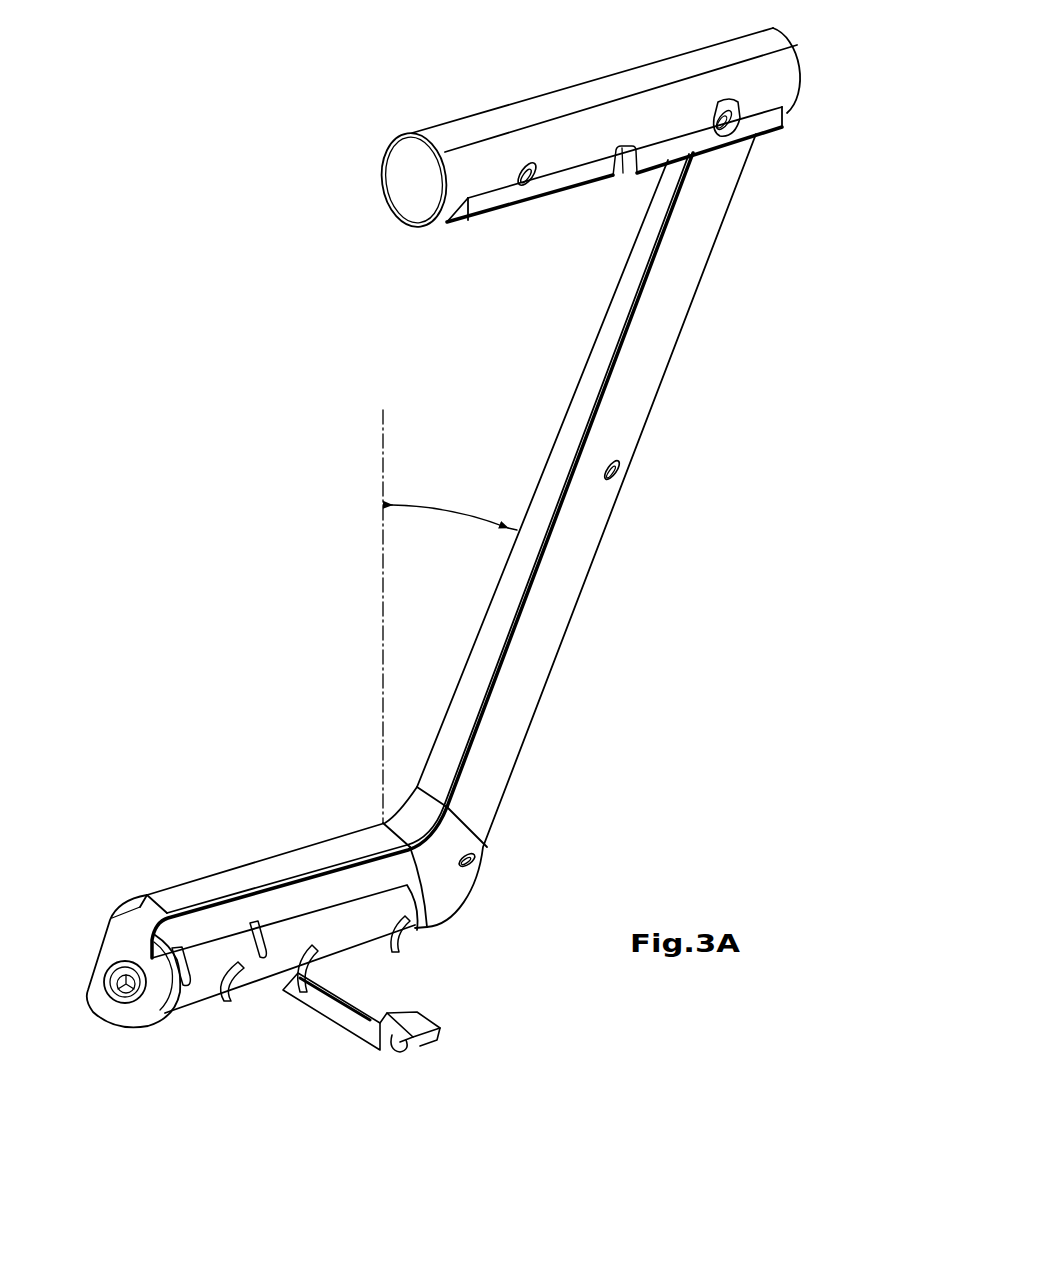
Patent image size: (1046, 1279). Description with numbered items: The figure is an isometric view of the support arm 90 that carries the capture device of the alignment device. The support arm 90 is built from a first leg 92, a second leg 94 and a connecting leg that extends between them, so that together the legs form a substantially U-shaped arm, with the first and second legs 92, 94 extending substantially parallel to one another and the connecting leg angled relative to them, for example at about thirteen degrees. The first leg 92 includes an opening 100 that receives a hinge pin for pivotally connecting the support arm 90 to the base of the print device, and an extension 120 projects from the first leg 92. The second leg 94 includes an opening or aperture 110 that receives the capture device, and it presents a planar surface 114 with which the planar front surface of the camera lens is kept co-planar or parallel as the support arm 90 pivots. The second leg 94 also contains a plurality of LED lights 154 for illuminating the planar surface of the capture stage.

The support arm 90 is at (453, 564).
The first leg 92 is at (257, 882).
The second leg 94 is at (553, 103).
The opening 100 is at (119, 1002).
The opening or aperture 110 is at (608, 200).
The planar surface 114 is at (470, 222).
The extension 120 is at (440, 1027).
The LED lights 154 is at (522, 208).